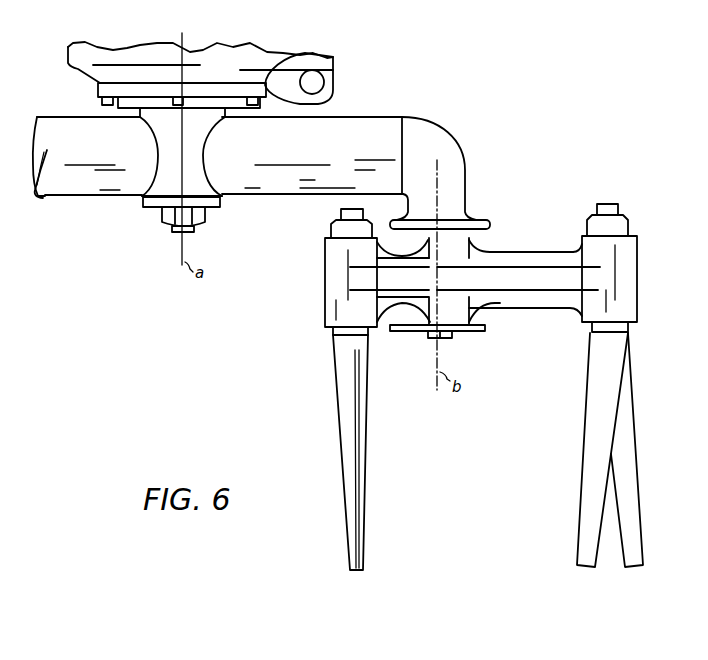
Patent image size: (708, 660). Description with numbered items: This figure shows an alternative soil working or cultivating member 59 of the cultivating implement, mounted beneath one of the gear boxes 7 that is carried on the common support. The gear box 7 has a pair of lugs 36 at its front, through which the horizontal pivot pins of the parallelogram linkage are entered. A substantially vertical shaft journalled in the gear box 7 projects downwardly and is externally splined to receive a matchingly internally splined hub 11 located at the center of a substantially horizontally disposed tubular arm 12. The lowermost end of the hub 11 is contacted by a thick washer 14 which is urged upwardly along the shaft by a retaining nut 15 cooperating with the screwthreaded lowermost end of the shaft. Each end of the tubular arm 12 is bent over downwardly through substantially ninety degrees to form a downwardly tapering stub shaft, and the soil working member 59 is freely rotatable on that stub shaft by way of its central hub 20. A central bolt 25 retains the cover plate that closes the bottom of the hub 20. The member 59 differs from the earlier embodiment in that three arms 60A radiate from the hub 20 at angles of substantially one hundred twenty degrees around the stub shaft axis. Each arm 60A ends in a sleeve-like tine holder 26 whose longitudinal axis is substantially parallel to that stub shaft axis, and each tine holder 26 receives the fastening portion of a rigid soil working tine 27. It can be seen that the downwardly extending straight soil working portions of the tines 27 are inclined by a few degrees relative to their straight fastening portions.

The gear box 7 is at (103, 50).
The lug 36 is at (333, 74).
The hub 11 is at (163, 135).
The tubular arm 12 is at (290, 203).
The thick washer 14 is at (150, 212).
The retaining nut 15 is at (162, 222).
The hub 20 is at (492, 330).
The arm 60A is at (550, 270).
The central bolt 25 is at (433, 339).
The sleeve-like tine holder 26 is at (325, 258).
The soil working tine 27 is at (340, 393).
The soil working or cultivating member 59 is at (490, 470).